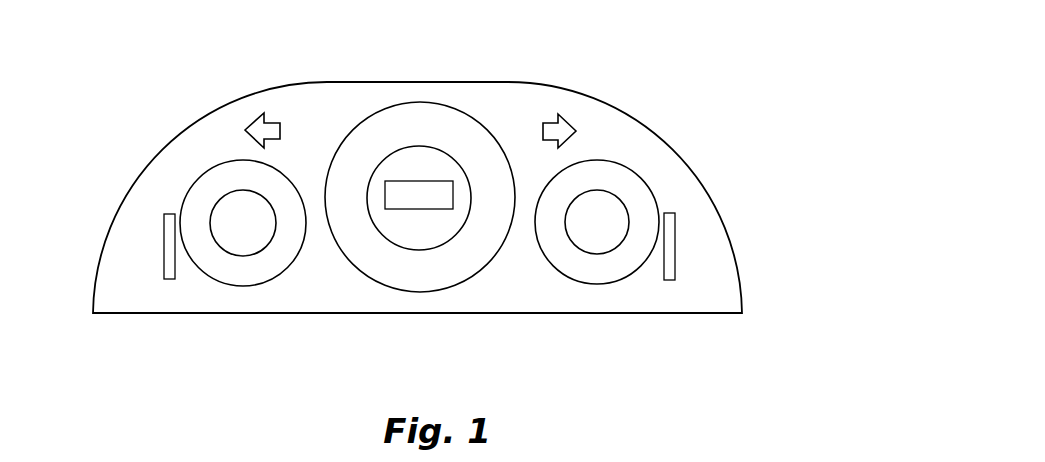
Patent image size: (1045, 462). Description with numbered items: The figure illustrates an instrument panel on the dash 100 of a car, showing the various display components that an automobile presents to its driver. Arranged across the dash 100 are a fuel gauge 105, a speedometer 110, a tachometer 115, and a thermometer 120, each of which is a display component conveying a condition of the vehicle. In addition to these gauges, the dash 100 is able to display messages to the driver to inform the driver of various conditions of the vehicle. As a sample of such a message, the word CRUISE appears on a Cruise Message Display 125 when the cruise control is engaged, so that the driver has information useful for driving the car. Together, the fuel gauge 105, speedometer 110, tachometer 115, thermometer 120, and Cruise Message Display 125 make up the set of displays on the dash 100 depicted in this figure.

The dash 100 is at (417, 82).
The fuel gauge 105 is at (150, 202).
The speedometer 110 is at (355, 265).
The tachometer 115 is at (597, 157).
The thermometer 120 is at (693, 197).
The Cruise Message Display 125 is at (420, 211).